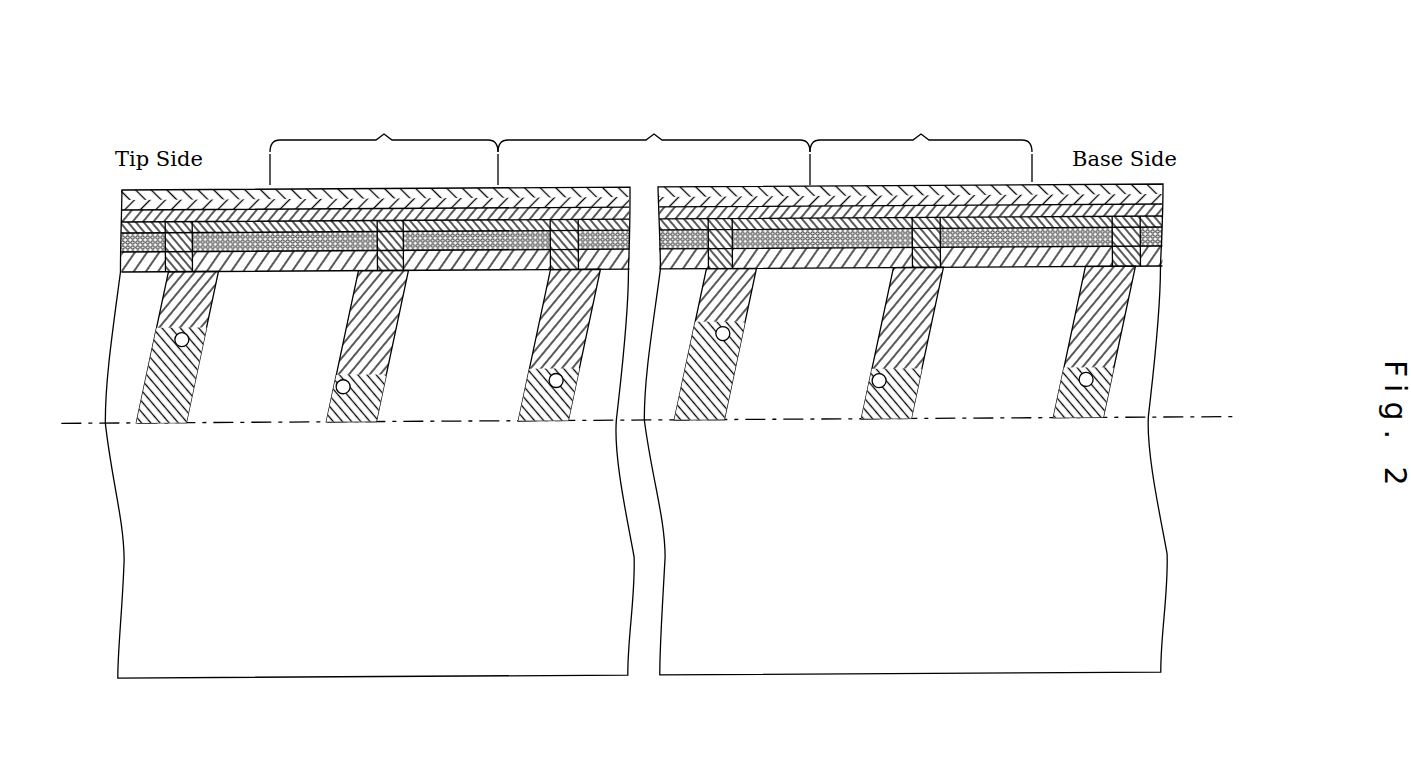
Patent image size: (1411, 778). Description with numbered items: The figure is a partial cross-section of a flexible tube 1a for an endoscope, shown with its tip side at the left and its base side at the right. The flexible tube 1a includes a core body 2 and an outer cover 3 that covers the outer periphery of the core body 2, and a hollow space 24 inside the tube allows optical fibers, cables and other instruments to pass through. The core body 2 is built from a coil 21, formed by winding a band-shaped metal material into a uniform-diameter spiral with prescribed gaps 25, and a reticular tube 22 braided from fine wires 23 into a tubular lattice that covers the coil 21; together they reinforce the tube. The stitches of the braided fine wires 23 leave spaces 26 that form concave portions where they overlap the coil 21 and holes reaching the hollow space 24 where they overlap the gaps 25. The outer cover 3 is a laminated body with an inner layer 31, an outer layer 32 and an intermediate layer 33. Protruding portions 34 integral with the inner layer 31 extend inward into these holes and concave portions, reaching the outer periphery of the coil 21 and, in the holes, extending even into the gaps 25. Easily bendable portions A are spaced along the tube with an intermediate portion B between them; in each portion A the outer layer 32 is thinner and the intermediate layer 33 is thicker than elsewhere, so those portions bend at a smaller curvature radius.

The flexible tube 1a is at (1037, 119).
The core body 2 is at (1208, 228).
The outer cover 3 is at (1208, 186).
The coil 21 is at (118, 272).
The reticular tube 22 is at (118, 233).
The fine wires 23 is at (1000, 278).
The hollow space 24 is at (1208, 272).
The gaps 25 is at (325, 428).
The spaces 26 is at (300, 274).
The inner layer 31 is at (118, 222).
The outer layer 32 is at (118, 190).
The intermediate layer 33 is at (118, 210).
The protruding portions 34 is at (540, 284).